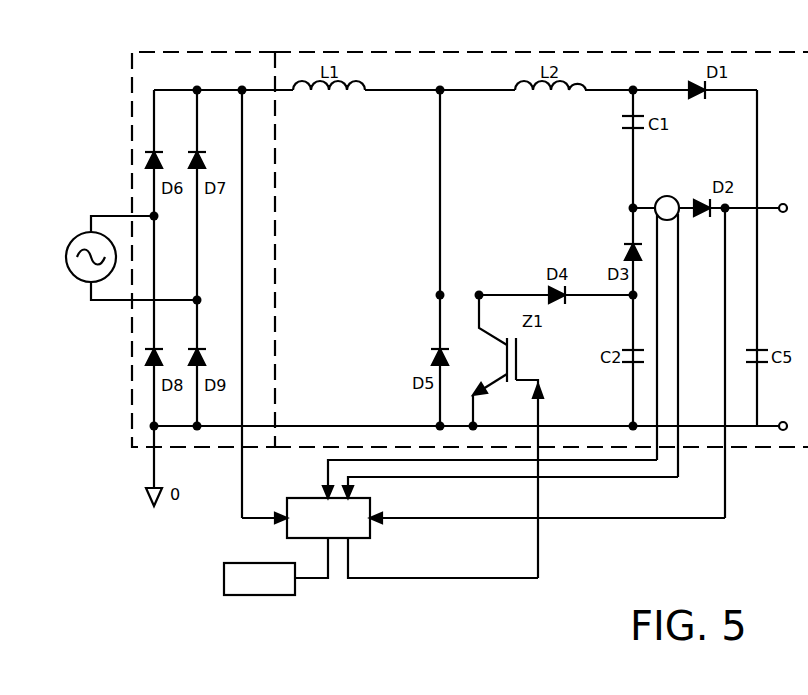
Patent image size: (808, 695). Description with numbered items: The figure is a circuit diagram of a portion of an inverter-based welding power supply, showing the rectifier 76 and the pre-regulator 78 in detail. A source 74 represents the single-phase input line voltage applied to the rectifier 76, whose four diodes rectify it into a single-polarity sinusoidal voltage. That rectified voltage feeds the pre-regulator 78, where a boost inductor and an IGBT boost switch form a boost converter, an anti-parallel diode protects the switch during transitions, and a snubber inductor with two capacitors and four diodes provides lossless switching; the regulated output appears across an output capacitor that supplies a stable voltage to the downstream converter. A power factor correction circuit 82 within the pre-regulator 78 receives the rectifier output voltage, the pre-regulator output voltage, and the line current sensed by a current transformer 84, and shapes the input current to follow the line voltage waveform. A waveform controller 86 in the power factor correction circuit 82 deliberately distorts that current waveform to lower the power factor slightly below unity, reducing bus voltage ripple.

The source 74 is at (66, 257).
The rectifier 76 is at (224, 52).
The pre-regulator 78 is at (672, 52).
The power factor correction circuit 82 is at (310, 498).
The current transformer 84 is at (666, 197).
The waveform controller 86 is at (224, 584).